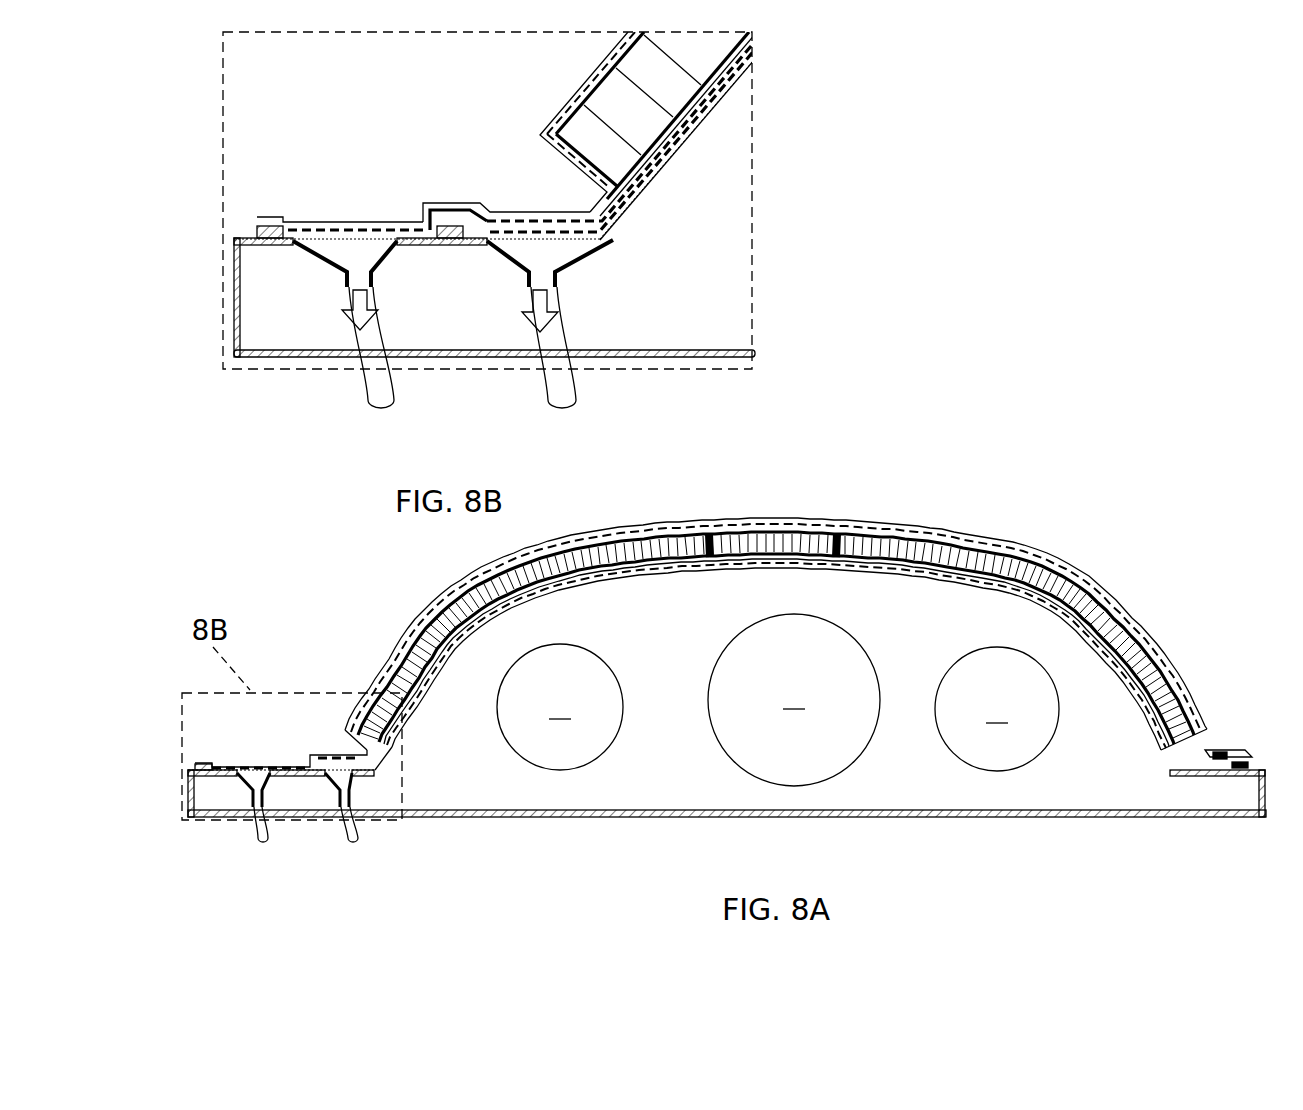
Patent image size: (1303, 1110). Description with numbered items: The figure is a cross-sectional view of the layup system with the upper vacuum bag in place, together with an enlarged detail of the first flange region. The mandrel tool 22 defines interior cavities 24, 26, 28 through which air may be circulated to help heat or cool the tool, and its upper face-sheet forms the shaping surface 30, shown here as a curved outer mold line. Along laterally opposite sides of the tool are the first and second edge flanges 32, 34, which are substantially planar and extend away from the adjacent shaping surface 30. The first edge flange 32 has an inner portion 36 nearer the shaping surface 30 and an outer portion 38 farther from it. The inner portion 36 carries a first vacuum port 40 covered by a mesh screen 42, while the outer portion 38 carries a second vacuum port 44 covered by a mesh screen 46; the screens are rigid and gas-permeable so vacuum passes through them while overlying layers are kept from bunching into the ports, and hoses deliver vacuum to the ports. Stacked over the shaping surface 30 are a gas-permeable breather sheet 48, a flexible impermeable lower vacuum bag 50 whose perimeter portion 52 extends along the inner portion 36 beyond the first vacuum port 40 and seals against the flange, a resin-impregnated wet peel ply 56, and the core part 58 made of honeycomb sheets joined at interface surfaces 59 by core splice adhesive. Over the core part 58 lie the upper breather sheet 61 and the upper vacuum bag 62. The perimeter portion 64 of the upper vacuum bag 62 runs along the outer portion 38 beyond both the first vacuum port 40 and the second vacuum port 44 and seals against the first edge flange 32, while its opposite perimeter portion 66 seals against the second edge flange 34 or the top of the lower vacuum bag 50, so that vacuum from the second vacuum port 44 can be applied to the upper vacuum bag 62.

In FIG. 8A, the mandrel tool 22 is at (665, 821).
In FIG. 8A, the interior cavity 24 is at (560, 707).
In FIG. 8A, the interior cavity 26 is at (794, 700).
In FIG. 8A, the interior cavity 28 is at (997, 709).
In FIG. 8B, the shaping surface 30 is at (741, 88).
In FIG. 8B, the first edge flange 32 is at (230, 302).
In FIG. 8A, the first edge flange 32 is at (208, 820).
In FIG. 8A, the second edge flange 34 is at (1245, 820).
In FIG. 8B, the inner portion 36 is at (461, 254).
In FIG. 8A, the inner portion 36 is at (303, 789).
In FIG. 8B, the outer portion 38 is at (279, 248).
In FIG. 8A, the outer portion 38 is at (211, 782).
In FIG. 8B, the first vacuum port 40 is at (539, 262).
In FIG. 8A, the first vacuum port 40 is at (333, 787).
In FIG. 8B, the mesh screen 42 is at (565, 240).
In FIG. 8A, the mesh screen 42 is at (348, 774).
In FIG. 8B, the second vacuum port 44 is at (356, 252).
In FIG. 8A, the second vacuum port 44 is at (247, 784).
In FIG. 8B, the mesh screen 46 is at (383, 242).
In FIG. 8A, the mesh screen 46 is at (264, 774).
In FIG. 8B, the breather sheet 48 is at (638, 208).
In FIG. 8B, the lower vacuum bag 50 is at (663, 171).
In FIG. 8B, the perimeter portion 52 is at (492, 215).
In FIG. 8B, the wet peel ply 56 is at (688, 129).
In FIG. 8B, the core part 58 is at (636, 85).
In FIG. 8A, the core part 58 is at (1081, 572).
In FIG. 8A, the interface surface 59 is at (843, 545).
In FIG. 8B, the upper breather sheet 61 is at (556, 105).
In FIG. 8A, the upper breather sheet 61 is at (1031, 539).
In FIG. 8B, the upper vacuum bag 62 is at (545, 118).
In FIG. 8A, the upper vacuum bag 62 is at (963, 527).
In FIG. 8B, the perimeter portion 64 is at (335, 217).
In FIG. 8A, the perimeter portion 66 is at (1222, 749).